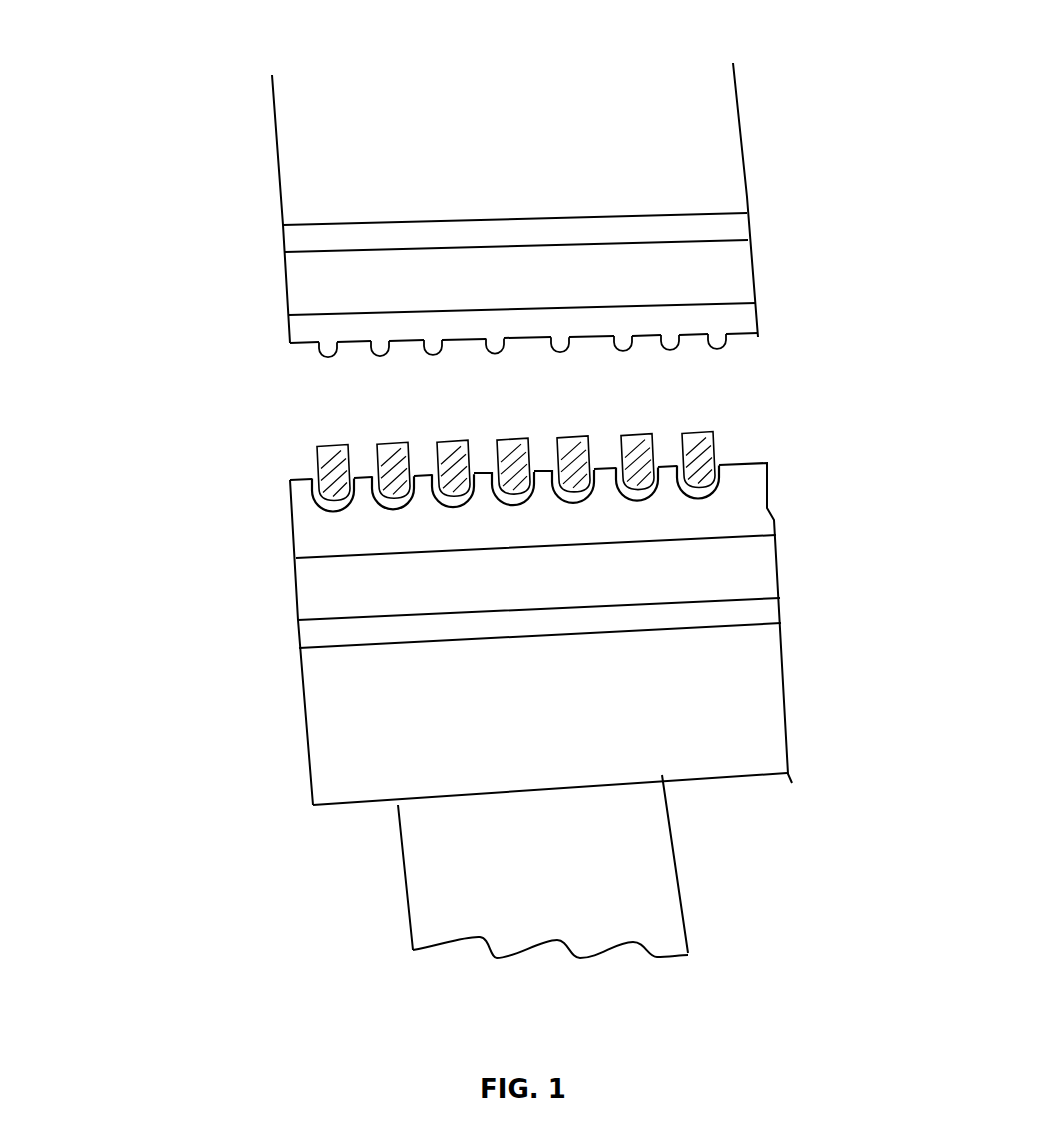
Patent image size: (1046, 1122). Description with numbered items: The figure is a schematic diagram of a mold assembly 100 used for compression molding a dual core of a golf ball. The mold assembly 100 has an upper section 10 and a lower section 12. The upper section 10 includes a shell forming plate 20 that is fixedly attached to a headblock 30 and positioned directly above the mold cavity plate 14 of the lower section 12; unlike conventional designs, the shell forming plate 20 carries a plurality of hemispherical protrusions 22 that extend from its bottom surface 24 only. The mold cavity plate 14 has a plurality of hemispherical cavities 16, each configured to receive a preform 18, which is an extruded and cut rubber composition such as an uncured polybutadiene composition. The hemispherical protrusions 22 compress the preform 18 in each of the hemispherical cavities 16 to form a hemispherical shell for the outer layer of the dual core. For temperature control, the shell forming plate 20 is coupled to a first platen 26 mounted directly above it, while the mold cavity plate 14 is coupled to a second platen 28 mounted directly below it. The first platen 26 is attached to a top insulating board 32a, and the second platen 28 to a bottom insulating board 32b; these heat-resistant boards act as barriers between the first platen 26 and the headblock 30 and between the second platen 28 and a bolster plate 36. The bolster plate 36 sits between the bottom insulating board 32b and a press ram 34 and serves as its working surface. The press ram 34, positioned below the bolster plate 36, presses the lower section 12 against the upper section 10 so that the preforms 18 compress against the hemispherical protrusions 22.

The mold assembly 100 is at (143, 70).
The upper section 10 is at (832, 48).
The lower section 12 is at (830, 960).
The mold cavity plate 14 is at (293, 518).
The hemispherical cavities 16 is at (310, 477).
The preform 18 is at (716, 440).
The shell forming plate 20 is at (287, 330).
The hemispherical protrusions 22 is at (310, 355).
The bottom surface 24 is at (750, 334).
The first platen 26 is at (287, 277).
The second platen 28 is at (302, 597).
The headblock 30 is at (280, 147).
The top insulating board 32a is at (283, 240).
The bottom insulating board 32b is at (305, 638).
The press ram 34 is at (408, 890).
The bolster plate 36 is at (308, 745).